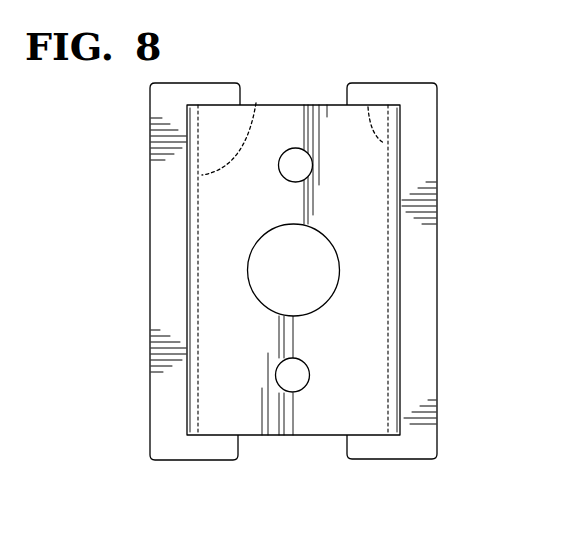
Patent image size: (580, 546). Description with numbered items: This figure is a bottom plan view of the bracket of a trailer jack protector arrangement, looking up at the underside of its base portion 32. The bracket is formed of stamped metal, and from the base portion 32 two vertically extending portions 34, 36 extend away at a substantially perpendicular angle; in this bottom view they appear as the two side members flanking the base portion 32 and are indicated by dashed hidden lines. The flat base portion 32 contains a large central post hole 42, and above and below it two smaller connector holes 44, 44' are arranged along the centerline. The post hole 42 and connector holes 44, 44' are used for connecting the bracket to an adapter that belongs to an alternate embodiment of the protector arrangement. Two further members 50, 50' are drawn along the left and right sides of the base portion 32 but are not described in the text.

The base portion 32 is at (361, 420).
The vertically extending portion 34 is at (256, 103).
The vertically extending portion 36 is at (368, 107).
The post hole 42 is at (323, 280).
The connector hole 44 is at (299, 92).
The connector hole 44' is at (261, 447).
The left bracket 50 is at (157, 271).
The right bracket 50' is at (438, 271).